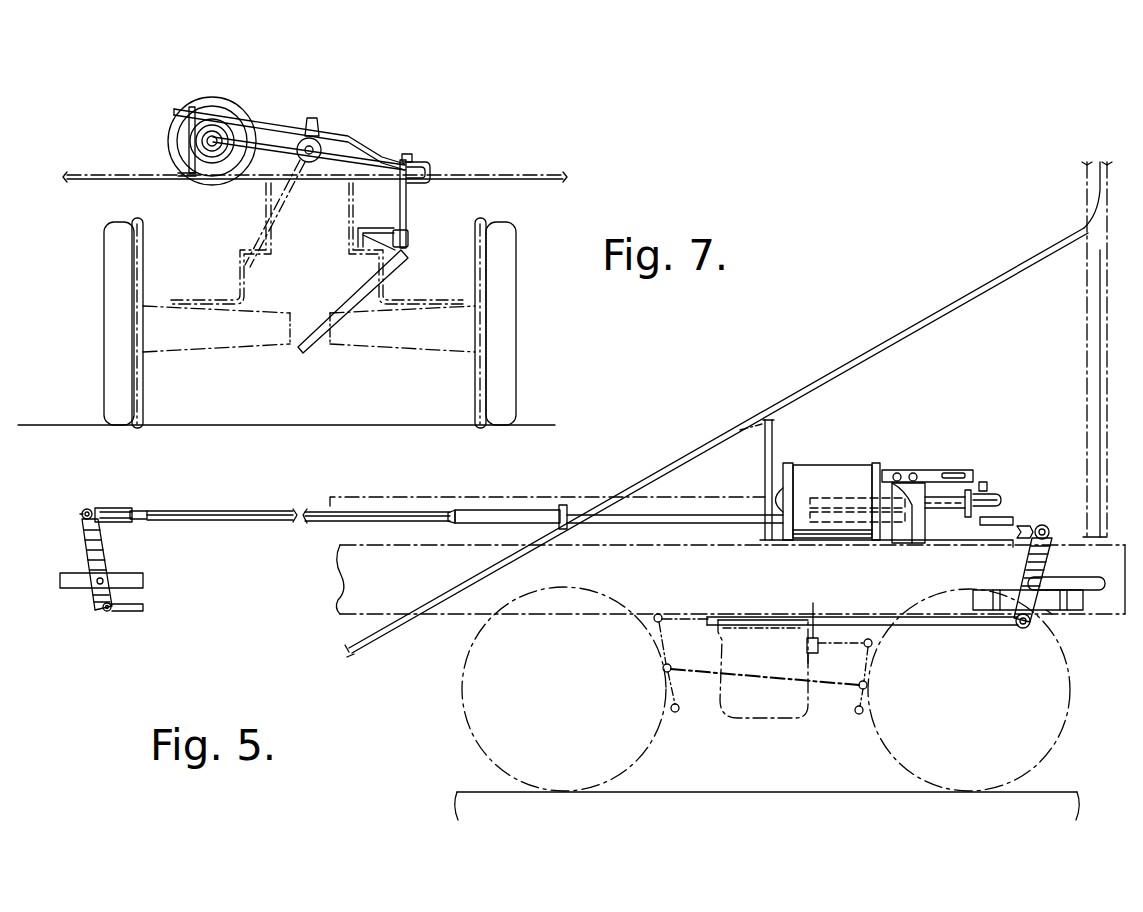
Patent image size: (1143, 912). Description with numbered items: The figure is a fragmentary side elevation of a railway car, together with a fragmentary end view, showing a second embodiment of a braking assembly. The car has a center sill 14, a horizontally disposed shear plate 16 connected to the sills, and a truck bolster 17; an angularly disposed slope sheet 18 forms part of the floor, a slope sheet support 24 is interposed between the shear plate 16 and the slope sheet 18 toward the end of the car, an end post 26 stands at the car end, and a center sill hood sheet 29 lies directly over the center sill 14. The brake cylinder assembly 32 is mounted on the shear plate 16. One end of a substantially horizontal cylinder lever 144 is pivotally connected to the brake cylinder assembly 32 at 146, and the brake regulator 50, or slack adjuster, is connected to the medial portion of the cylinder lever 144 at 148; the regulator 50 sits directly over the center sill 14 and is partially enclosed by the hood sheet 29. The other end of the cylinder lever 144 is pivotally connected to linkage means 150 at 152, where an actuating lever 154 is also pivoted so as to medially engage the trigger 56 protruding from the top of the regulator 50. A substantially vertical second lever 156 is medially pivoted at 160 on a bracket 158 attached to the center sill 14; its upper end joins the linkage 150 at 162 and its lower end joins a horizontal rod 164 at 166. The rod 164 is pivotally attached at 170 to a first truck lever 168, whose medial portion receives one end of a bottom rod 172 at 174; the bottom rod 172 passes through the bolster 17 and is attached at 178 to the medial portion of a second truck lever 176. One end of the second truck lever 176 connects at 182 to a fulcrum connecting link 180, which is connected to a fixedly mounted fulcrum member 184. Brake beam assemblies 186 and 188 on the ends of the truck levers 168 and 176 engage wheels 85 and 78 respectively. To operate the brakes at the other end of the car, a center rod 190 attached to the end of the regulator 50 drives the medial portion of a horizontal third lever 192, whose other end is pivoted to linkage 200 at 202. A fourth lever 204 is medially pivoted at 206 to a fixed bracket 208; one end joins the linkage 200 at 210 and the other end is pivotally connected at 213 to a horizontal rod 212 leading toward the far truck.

In FIG. 7, the center sill 14 is at (265, 238).
In FIG. 5, the center sill 14 is at (429, 588).
In FIG. 5, the shear plate 16 is at (806, 542).
In FIG. 5, the truck bolster 17 is at (743, 713).
In FIG. 5, the slope sheet 18 is at (673, 465).
In FIG. 5, the slope sheet support 24 is at (765, 467).
In FIG. 5, the end post 26 is at (1093, 357).
In FIG. 7, the center sill hood sheet 29 is at (342, 152).
In FIG. 5, the center sill hood sheet 29 is at (387, 500).
In FIG. 7, the brake cylinder assembly 32 is at (168, 143).
In FIG. 5, the brake cylinder assembly 32 is at (823, 476).
In FIG. 5, the brake regulator 50 is at (680, 512).
In FIG. 7, the trigger 56 is at (316, 126).
In FIG. 5, the trigger 56 is at (982, 480).
In FIG. 5, the wheel 78 is at (1055, 742).
In FIG. 5, the wheel 85 is at (575, 780).
In FIG. 7, the cylinder lever 144 is at (257, 180).
In FIG. 5, the cylinder lever 144 is at (1001, 492).
In FIG. 7, the pivotal connection 146 is at (221, 136).
In FIG. 7, the connection 148 is at (311, 163).
In FIG. 5, the linkage means 150 is at (1019, 526).
In FIG. 7, the pivotal connection 152 is at (411, 156).
In FIG. 7, the actuating lever 154 is at (279, 128).
In FIG. 7, the second lever 156 is at (408, 205).
In FIG. 5, the second lever 156 is at (1023, 562).
In FIG. 7, the bracket 158 is at (368, 228).
In FIG. 5, the bracket 158 is at (1073, 597).
In FIG. 7, the pivot 160 is at (409, 238).
In FIG. 5, the pivot 160 is at (1050, 614).
In FIG. 7, the pivotal connection 162 is at (431, 167).
In FIG. 5, the pivotal connection 162 is at (1056, 523).
In FIG. 5, the rod 164 is at (854, 624).
In FIG. 5, the pivotal connection 166 is at (1021, 630).
In FIG. 7, the first truck lever 168 is at (358, 296).
In FIG. 5, the first truck lever 168 is at (660, 641).
In FIG. 5, the pivotal attachment 170 is at (661, 614).
In FIG. 5, the bottom rod 172 is at (798, 683).
In FIG. 5, the attachment 174 is at (663, 669).
In FIG. 5, the second truck lever 176 is at (868, 662).
In FIG. 5, the attachment 178 is at (868, 685).
In FIG. 5, the fulcrum connecting link 180 is at (864, 646).
In FIG. 5, the connection 182 is at (873, 643).
In FIG. 5, the fulcrum member 184 is at (815, 608).
In FIG. 5, the brake beam assembly 186 is at (677, 712).
In FIG. 5, the brake beam assembly 188 is at (865, 707).
In FIG. 5, the center rod 190 is at (215, 511).
In FIG. 5, the third lever 192 is at (142, 510).
In FIG. 5, the linkage 200 is at (87, 509).
In FIG. 5, the pivotal attachment 202 is at (118, 506).
In FIG. 5, the fourth lever 204 is at (84, 550).
In FIG. 5, the pivotal connection 206 is at (96, 586).
In FIG. 5, the bracket 208 is at (143, 575).
In FIG. 5, the pivotal connection 210 is at (82, 514).
In FIG. 5, the rod 212 is at (137, 618).
In FIG. 5, the pivotal connection 213 is at (107, 612).